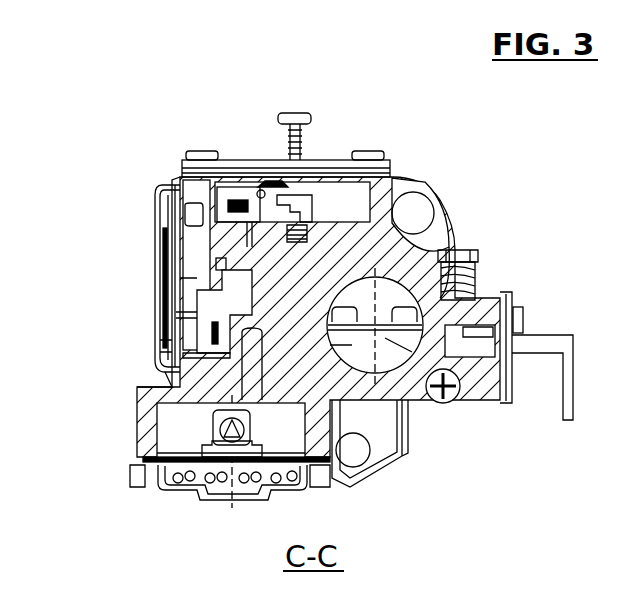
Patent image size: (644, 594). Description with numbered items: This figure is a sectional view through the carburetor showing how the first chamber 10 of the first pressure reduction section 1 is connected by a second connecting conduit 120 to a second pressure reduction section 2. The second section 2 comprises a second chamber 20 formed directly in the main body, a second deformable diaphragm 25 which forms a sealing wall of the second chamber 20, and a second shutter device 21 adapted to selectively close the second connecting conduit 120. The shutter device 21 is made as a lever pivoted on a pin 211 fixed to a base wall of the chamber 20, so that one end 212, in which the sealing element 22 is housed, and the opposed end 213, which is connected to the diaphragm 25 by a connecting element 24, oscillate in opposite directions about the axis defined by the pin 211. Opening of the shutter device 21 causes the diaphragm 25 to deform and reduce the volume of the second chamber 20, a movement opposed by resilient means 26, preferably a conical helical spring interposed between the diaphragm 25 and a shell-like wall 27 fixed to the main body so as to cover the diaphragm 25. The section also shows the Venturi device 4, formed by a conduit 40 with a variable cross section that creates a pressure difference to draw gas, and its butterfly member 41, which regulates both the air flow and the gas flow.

The first pressure reduction section 1 is at (148, 500).
The second pressure reduction section 2 is at (152, 183).
The Venturi device 4 is at (418, 390).
The first chamber 10 is at (162, 447).
The second chamber 20 is at (157, 225).
The second shutter device 21 is at (160, 292).
The sealing element 22 is at (268, 185).
The connecting element 24 is at (235, 292).
The second deformable diaphragm 25 is at (157, 348).
The resilient means 26 is at (160, 240).
The shell-like wall 27 is at (158, 205).
The conduit with variable cross section 40 is at (470, 250).
The butterfly member 41 is at (467, 403).
The second connecting conduit 120 is at (182, 418).
The pin 211 is at (157, 316).
The end of the lever housing the sealing element 212 is at (155, 370).
The end of the lever connected to the diaphragm 213 is at (205, 268).